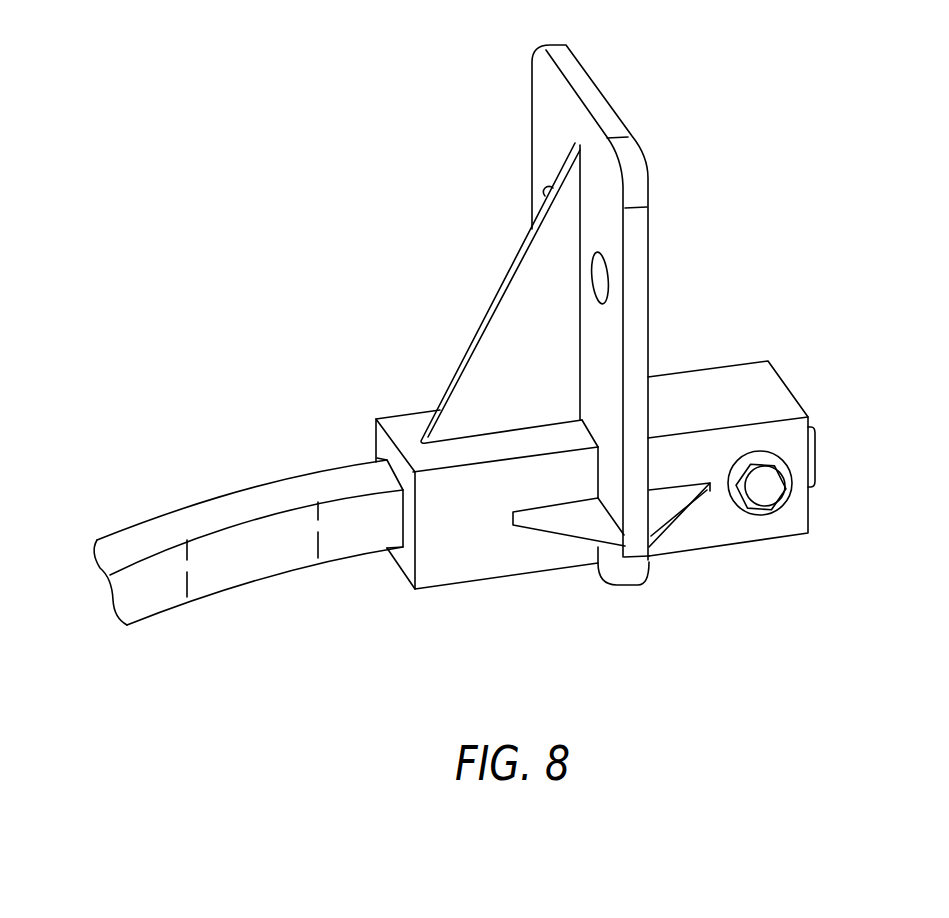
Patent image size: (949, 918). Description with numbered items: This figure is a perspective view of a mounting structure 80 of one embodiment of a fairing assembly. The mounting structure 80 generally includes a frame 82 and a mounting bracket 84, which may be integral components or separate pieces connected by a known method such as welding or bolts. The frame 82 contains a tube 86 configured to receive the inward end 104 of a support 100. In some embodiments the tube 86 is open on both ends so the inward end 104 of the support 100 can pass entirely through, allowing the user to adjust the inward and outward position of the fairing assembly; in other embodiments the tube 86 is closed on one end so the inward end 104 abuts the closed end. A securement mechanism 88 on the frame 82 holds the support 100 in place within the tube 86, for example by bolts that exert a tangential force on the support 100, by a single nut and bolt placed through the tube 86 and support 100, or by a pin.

The mounting structure 80 is at (610, 612).
The frame 82 is at (703, 532).
The mounting bracket 84 is at (647, 173).
The tube 86 is at (397, 411).
The securement mechanism 88 is at (763, 490).
The support 100 is at (248, 490).
The inward end 104 is at (812, 437).